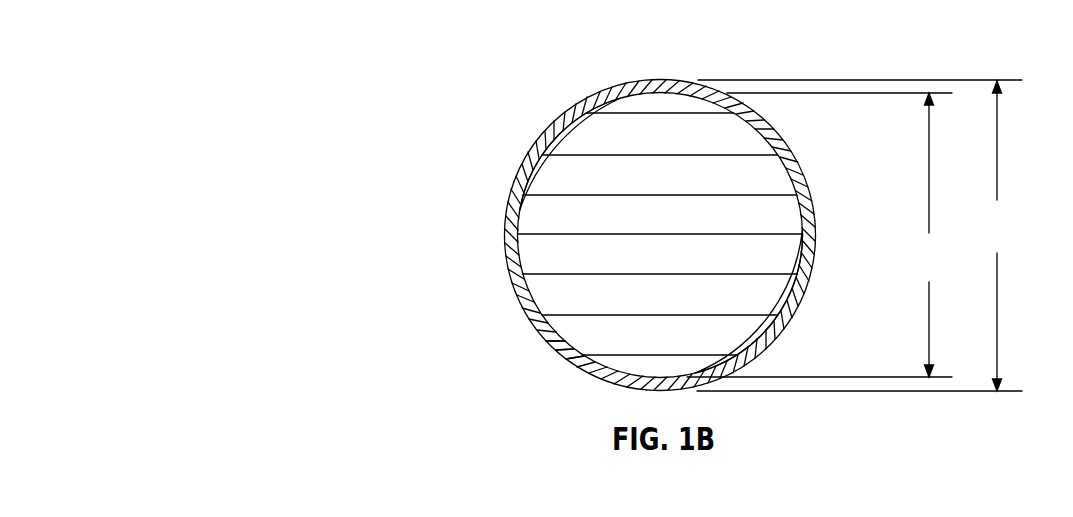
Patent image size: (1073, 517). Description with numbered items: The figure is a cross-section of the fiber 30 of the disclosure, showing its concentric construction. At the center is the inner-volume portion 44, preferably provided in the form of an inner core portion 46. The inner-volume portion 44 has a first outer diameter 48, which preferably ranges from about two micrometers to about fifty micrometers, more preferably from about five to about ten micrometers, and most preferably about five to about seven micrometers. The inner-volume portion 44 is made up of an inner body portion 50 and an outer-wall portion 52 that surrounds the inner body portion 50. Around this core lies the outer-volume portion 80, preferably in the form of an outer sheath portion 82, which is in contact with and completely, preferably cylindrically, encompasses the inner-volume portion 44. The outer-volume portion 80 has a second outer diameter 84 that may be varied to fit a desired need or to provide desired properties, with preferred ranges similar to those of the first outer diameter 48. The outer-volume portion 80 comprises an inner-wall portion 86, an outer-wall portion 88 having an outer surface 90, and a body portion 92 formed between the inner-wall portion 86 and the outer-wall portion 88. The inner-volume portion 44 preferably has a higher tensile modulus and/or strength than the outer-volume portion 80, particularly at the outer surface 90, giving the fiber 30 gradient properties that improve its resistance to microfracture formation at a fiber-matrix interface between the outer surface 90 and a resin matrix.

The fiber 30 is at (777, 58).
The inner-volume portion 44 is at (778, 215).
The inner core portion 46 is at (545, 175).
The first outer diameter 48 is at (929, 165).
The inner body portion 50 is at (743, 142).
The outer-wall portion 52 is at (788, 160).
The outer-volume portion 80 is at (793, 305).
The outer sheath portion 82 is at (611, 90).
The second outer diameter 84 is at (998, 158).
The inner-wall portion 86 is at (557, 347).
The outer-wall portion 88 is at (517, 288).
The outer surface 90 is at (535, 325).
The body portion 92 is at (585, 366).